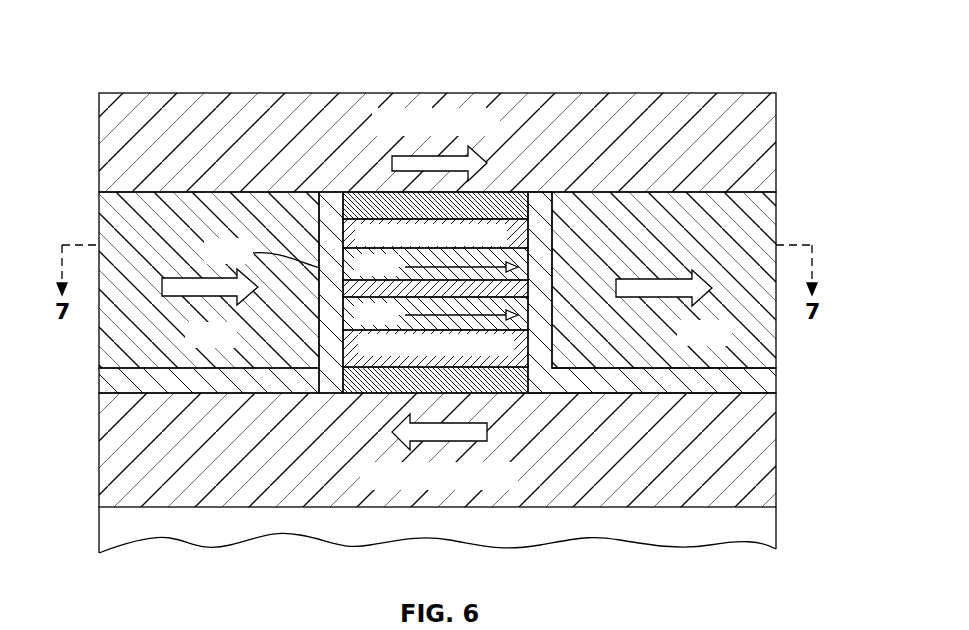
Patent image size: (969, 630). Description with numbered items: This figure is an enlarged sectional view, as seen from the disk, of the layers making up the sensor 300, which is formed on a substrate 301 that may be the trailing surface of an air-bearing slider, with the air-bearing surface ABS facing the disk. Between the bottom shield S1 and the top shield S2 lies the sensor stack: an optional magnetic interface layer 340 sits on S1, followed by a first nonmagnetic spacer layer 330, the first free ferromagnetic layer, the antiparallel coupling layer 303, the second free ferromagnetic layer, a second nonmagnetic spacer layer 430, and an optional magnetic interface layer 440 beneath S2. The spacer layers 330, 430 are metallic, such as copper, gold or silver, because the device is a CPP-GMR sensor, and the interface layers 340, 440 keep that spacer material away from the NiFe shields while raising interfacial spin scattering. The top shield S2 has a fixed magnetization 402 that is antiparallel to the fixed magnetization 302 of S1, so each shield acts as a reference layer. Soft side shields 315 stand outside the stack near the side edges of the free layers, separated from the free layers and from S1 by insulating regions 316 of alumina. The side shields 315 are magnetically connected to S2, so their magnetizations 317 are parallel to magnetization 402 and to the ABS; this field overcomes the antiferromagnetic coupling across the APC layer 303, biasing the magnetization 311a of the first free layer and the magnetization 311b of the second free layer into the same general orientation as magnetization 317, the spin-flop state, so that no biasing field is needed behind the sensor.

The sensor 300 is at (150, 33).
The magnetization of top shield S2 402 is at (392, 168).
The magnetic interface layer 440 is at (527, 195).
The second nonmagnetic spacer layer 430 is at (336, 240).
The insulating regions 316 is at (318, 258).
The first nonmagnetic spacer layer 330 is at (302, 292).
The side shield magnetizations 317 is at (183, 300).
The soft side shields 315 is at (108, 336).
The magnetization of FL2 311b is at (532, 228).
The antiparallel coupling (APC) layer 303 is at (540, 305).
The magnetization of FL1 311a is at (487, 384).
The magnetic interface layer 340 is at (528, 385).
The magnetization of bottom shield S1 302 is at (404, 438).
The substrate 301 is at (765, 527).
The top shield S2 is at (763, 135).
The bottom shield S1 is at (760, 422).
The air-bearing surface ABS is at (765, 467).